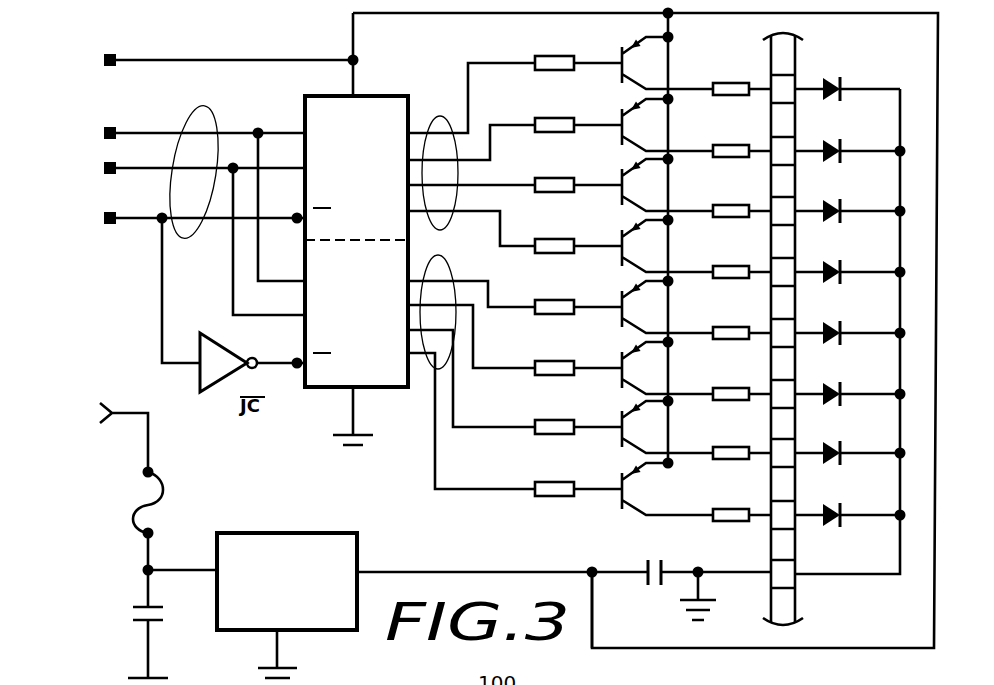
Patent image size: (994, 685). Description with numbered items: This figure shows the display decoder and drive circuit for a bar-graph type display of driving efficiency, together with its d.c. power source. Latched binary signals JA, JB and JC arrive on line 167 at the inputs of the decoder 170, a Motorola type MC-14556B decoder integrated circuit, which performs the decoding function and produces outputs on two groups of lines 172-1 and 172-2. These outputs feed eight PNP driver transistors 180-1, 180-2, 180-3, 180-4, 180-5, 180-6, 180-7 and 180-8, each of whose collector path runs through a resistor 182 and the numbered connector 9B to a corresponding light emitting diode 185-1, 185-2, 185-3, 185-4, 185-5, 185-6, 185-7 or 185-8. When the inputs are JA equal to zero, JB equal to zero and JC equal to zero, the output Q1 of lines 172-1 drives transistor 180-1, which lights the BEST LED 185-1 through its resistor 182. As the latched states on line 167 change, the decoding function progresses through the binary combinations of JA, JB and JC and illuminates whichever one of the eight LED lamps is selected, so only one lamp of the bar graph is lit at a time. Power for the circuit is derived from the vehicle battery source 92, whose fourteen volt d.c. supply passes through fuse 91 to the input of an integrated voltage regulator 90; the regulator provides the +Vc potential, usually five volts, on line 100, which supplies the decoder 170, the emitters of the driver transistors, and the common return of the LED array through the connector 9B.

The latched signal line 167 is at (188, 125).
The decoder integrated circuit 170 is at (382, 103).
The first decoder output line 172-1 is at (440, 127).
The second decoder output line 172-2 is at (466, 256).
The PNP driver transistor 180-1 is at (620, 55).
The PNP driver transistor 180-2 is at (620, 117).
The PNP driver transistor 180-3 is at (620, 177).
The PNP driver transistor 180-4 is at (620, 238).
The PNP driver transistor 180-5 is at (620, 299).
The PNP driver transistor 180-6 is at (620, 360).
The PNP driver transistor 180-7 is at (620, 419).
The PNP driver transistor 180-8 is at (620, 481).
The resistor 182 is at (697, 82).
The connector 9B is at (797, 74).
The light emitting diode 185-1 is at (848, 85).
The light emitting diode 185-2 is at (858, 129).
The light emitting diode 185-3 is at (858, 189).
The light emitting diode 185-4 is at (858, 250).
The light emitting diode 185-5 is at (858, 311).
The light emitting diode 185-6 is at (858, 372).
The light emitting diode 185-7 is at (858, 431).
The light emitting diode 185-8 is at (858, 493).
The vehicle battery source 92 is at (90, 403).
The fuse 91 is at (164, 498).
The integrated voltage regulator 90 is at (298, 552).
The +Vc supply line 100 is at (536, 570).